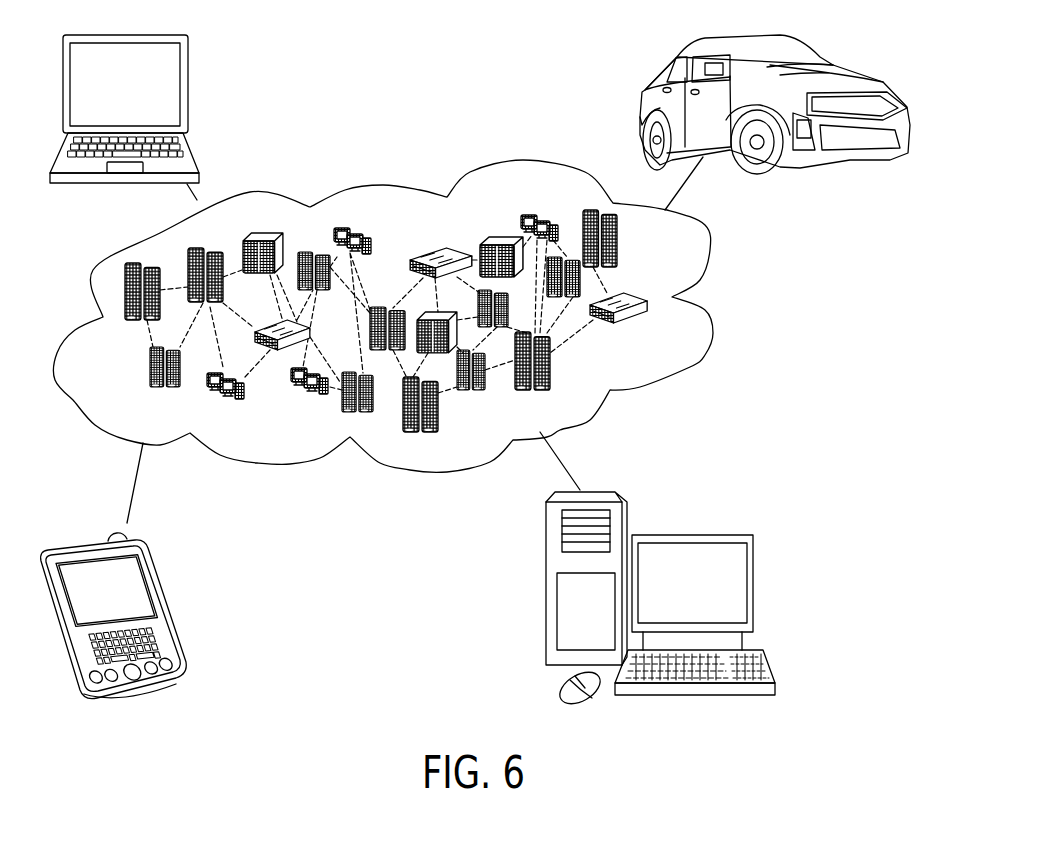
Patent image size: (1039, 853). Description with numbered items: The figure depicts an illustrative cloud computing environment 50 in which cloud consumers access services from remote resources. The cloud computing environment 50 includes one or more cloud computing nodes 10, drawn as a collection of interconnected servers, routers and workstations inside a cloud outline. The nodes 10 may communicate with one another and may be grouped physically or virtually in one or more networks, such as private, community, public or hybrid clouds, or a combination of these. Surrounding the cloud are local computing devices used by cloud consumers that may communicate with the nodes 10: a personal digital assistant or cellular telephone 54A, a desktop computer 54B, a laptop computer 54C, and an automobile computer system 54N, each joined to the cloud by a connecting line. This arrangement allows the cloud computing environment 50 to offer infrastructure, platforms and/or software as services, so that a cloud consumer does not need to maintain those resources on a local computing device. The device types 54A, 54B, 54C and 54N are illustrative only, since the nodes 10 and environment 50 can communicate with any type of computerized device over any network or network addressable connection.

The cloud computing nodes 10 is at (662, 343).
The cloud computing environment 50 is at (710, 250).
The personal digital assistant or cellular telephone 54A is at (160, 583).
The desktop computer 54B is at (757, 583).
The laptop computer 54C is at (187, 88).
The automobile computer system 54N is at (820, 52).